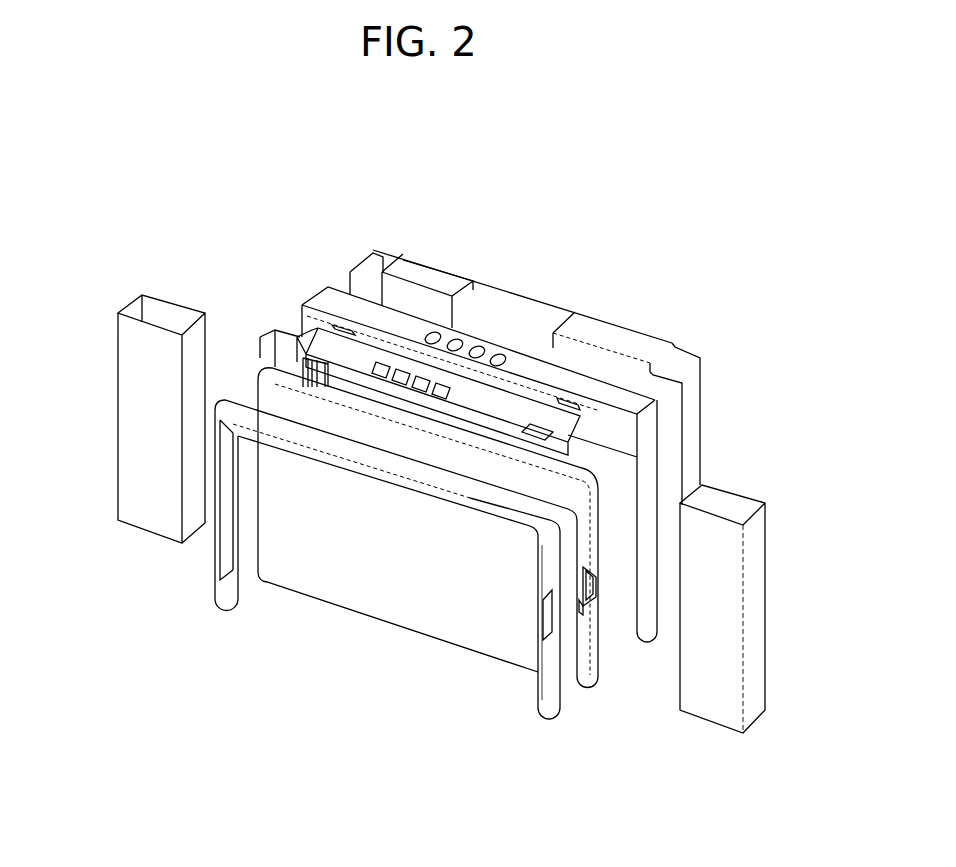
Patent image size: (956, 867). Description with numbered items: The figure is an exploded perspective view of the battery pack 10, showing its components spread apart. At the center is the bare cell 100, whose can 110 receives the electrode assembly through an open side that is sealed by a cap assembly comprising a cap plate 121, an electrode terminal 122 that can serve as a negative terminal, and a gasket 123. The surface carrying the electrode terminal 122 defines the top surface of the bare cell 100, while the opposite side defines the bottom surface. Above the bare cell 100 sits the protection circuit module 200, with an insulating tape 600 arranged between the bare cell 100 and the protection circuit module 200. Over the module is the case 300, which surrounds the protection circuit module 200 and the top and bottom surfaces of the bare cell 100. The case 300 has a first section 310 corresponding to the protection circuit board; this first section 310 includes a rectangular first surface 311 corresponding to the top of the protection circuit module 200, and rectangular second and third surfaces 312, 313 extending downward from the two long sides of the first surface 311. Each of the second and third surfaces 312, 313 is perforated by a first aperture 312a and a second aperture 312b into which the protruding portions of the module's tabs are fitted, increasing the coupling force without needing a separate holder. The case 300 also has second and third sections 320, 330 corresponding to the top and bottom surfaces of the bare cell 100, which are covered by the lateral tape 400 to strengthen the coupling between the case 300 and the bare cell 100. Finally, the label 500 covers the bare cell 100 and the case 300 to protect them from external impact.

The battery pack 10 is at (160, 222).
The bare cell 100 is at (439, 557).
The can 110 is at (380, 613).
The cap plate 121 is at (585, 676).
The electrode terminal 122 is at (597, 590).
The gasket 123 is at (584, 622).
The protection circuit module 200 is at (305, 343).
The case 300 is at (317, 291).
The first section 310 is at (525, 236).
The first surface 311 is at (452, 328).
The second surface 312 is at (388, 343).
The first aperture 312a is at (573, 403).
The second aperture 312b is at (333, 327).
The third surface 313 is at (463, 335).
The second section 320 is at (653, 427).
The third section 330 is at (262, 349).
The lateral tape 400 is at (128, 414).
The label 500 is at (584, 318).
The insulating tape 600 is at (550, 704).